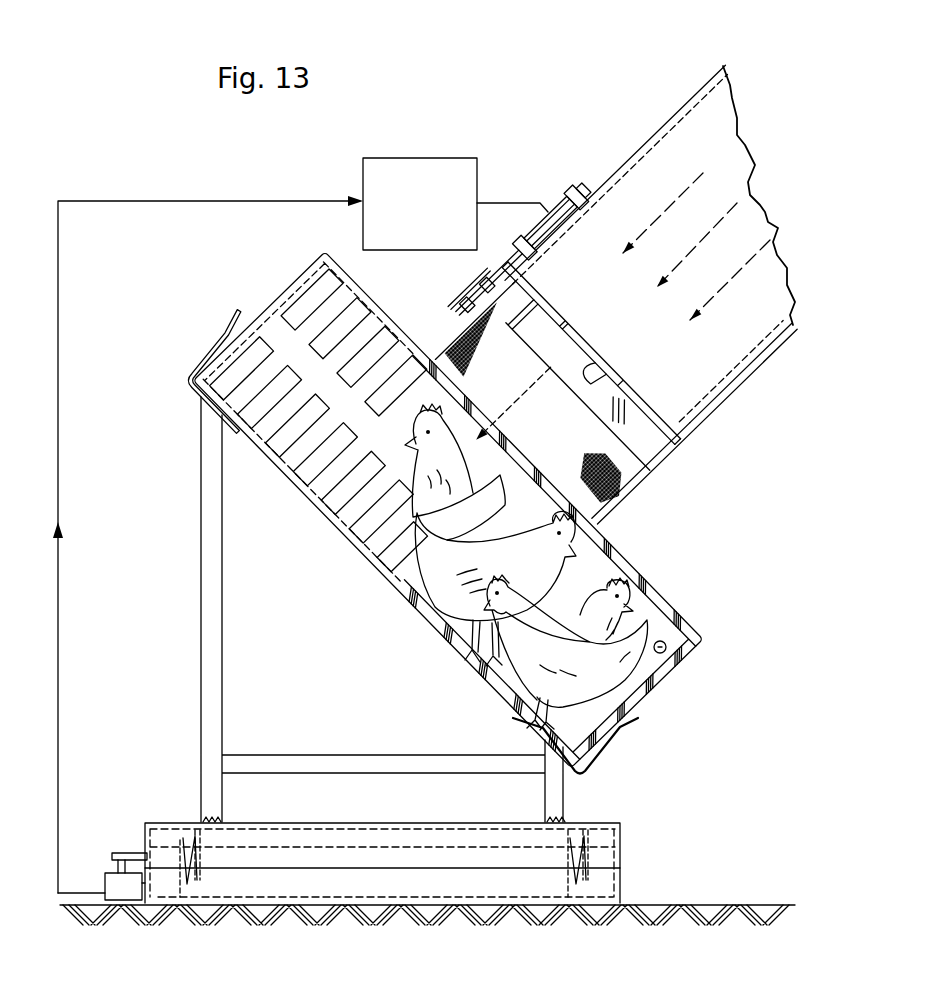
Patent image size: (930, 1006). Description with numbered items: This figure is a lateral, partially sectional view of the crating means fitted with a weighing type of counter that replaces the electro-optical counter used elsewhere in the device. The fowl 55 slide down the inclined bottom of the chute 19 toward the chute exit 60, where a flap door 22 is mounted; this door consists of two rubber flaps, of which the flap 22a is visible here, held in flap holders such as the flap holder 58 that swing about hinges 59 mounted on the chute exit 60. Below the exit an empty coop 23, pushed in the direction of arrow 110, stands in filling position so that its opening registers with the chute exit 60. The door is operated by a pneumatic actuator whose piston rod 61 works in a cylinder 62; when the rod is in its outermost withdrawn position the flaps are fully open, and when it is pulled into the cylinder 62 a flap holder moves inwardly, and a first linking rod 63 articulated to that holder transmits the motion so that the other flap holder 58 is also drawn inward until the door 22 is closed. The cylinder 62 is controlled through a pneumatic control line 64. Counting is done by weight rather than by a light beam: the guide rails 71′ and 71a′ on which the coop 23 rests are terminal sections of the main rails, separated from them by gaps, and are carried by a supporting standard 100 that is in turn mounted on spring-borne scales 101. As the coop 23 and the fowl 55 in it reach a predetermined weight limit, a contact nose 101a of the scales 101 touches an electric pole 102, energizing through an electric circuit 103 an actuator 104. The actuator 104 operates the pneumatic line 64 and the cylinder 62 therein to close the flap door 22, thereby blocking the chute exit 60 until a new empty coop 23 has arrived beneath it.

The chute 19 is at (740, 362).
The flap door 22 is at (434, 337).
The flap 22a is at (628, 477).
The coop 23 is at (278, 302).
The fowl 55 is at (585, 635).
The flap holder 58 is at (665, 452).
The hinge 59 is at (547, 300).
The chute exit 60 is at (600, 362).
The piston rod 61 is at (500, 270).
The cylinder 62 is at (528, 226).
The first linking rod 63 is at (466, 296).
The pneumatic control line 64 is at (497, 203).
The terminal section of guide rail 71a′ is at (204, 340).
The terminal section of guide rail 71′ is at (600, 742).
The supporting standard 100 is at (205, 641).
The spring-borne scales 101 is at (630, 858).
The contact nose 101a is at (133, 852).
The electric pole 102 is at (118, 876).
The electric circuit 103 is at (58, 468).
The actuator 104 is at (440, 212).
The arrow 110 is at (667, 654).